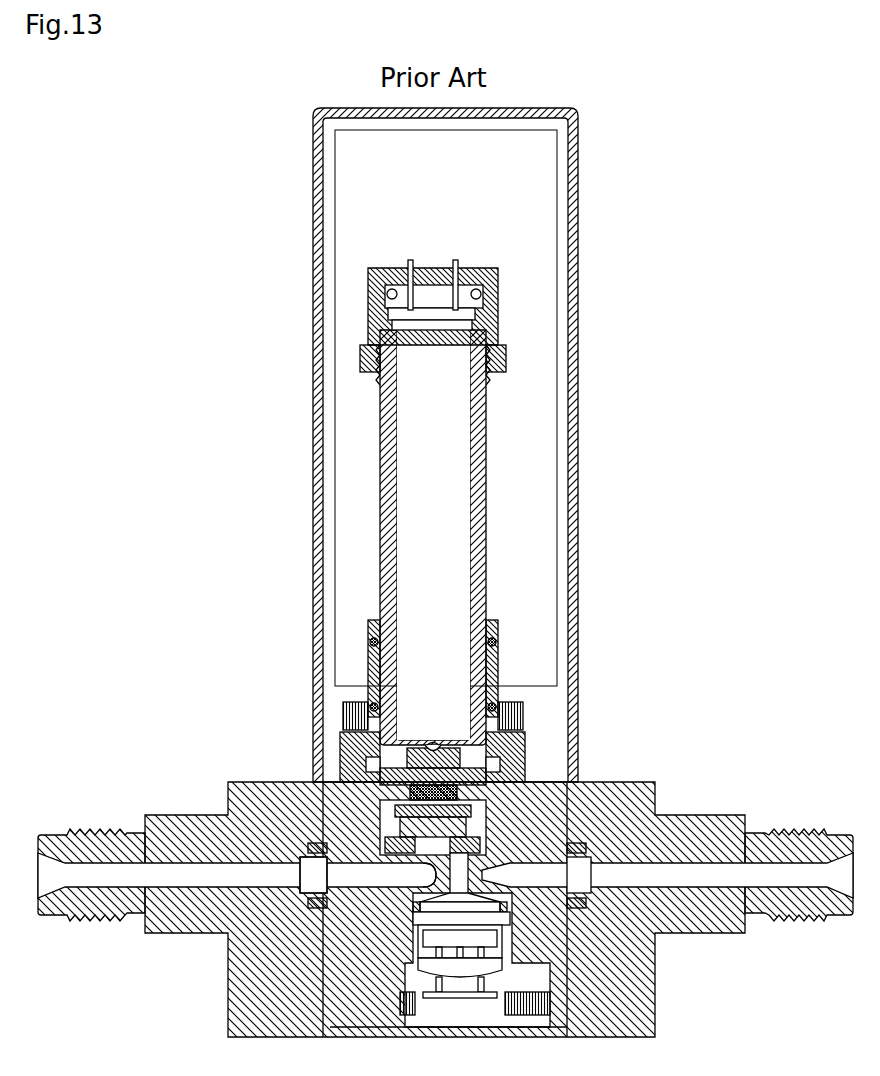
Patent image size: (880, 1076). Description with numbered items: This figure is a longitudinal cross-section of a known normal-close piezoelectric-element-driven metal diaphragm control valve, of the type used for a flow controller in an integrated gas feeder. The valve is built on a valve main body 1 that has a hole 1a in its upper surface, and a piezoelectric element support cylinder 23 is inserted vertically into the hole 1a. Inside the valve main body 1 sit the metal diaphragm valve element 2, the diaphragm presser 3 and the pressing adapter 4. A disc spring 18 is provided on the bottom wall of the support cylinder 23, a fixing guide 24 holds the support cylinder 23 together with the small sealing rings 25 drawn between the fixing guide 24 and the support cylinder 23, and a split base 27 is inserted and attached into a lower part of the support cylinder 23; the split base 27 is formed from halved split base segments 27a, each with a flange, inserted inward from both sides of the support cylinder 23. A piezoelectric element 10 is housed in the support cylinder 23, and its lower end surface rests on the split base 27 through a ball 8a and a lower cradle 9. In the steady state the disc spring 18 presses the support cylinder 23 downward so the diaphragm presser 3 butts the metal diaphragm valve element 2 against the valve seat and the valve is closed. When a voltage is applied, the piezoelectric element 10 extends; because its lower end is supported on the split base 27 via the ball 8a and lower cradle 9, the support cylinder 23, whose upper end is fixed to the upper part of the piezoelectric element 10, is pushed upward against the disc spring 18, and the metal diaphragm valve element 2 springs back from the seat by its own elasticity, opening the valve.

The valve main body 1 is at (540, 823).
The hole 1a is at (503, 806).
The metal diaphragm valve element 2 is at (420, 837).
The diaphragm presser 3 is at (423, 876).
The pressing adapter 4 is at (335, 875).
The ball 8a is at (434, 745).
The lower cradle 9 is at (426, 746).
The piezoelectric element 10 is at (440, 521).
The disc spring 18 is at (475, 765).
The piezoelectric element support cylinder 23 is at (480, 452).
The fixing guide 24 is at (493, 672).
The O-ring 25 is at (497, 640).
The split base 27 is at (403, 763).
The split base segments 27a is at (388, 780).